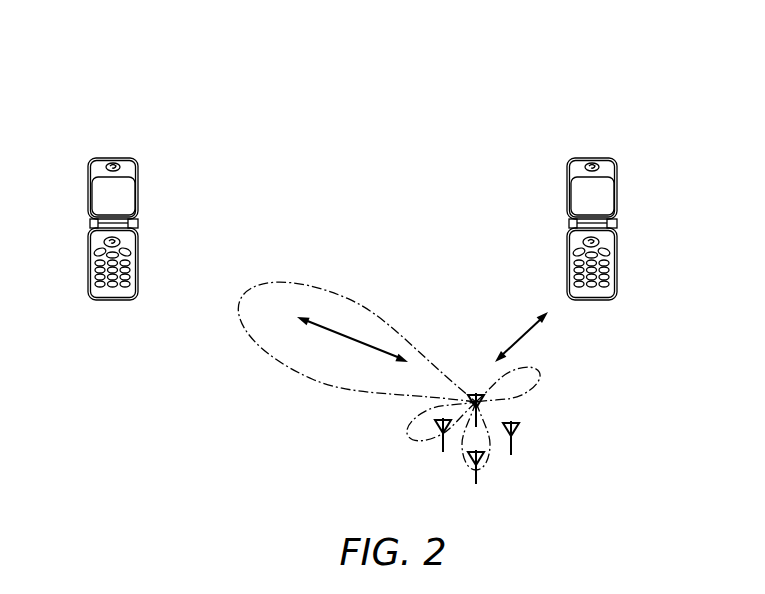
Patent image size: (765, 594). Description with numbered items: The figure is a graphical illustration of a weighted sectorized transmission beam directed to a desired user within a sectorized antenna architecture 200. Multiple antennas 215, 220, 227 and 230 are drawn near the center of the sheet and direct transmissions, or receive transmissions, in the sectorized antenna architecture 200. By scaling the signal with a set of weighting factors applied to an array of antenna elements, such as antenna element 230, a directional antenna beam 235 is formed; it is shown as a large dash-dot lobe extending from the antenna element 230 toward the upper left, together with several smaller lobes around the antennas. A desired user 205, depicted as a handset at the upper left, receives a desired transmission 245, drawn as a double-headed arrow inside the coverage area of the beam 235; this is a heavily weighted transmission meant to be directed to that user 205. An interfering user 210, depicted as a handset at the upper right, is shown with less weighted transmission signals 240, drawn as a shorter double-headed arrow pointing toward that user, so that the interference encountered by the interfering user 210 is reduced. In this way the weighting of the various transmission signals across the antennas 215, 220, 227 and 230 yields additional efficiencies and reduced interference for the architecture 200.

The sectorized antenna architecture 200 is at (283, 68).
The desired user 205 is at (108, 157).
The interfering user 210 is at (596, 157).
The antenna 215 is at (512, 452).
The antenna 220 is at (472, 481).
The antenna 227 is at (442, 447).
The antenna element 230 is at (480, 393).
The directional antenna beam 235 is at (374, 294).
The less weighted transmission signals 240 is at (523, 337).
The desired transmission 245 is at (353, 340).